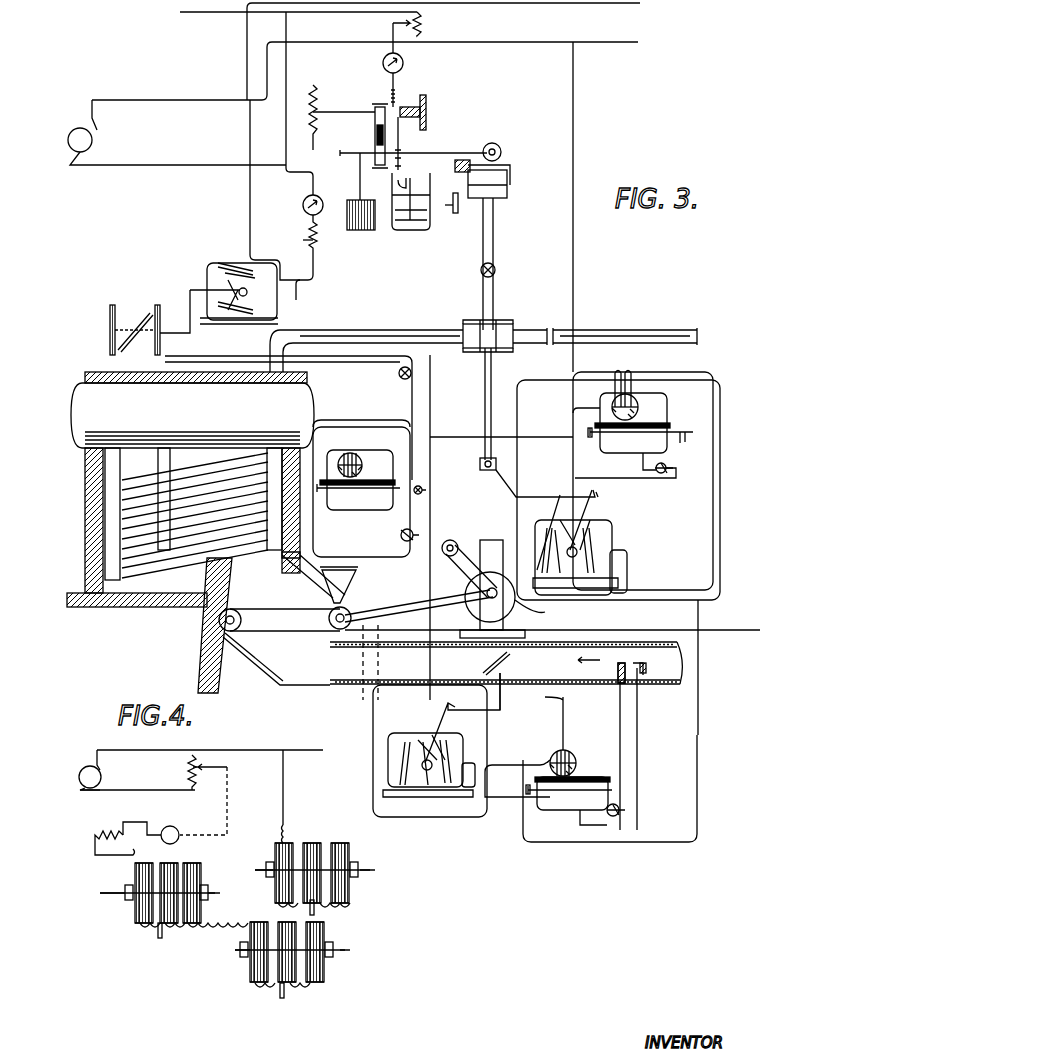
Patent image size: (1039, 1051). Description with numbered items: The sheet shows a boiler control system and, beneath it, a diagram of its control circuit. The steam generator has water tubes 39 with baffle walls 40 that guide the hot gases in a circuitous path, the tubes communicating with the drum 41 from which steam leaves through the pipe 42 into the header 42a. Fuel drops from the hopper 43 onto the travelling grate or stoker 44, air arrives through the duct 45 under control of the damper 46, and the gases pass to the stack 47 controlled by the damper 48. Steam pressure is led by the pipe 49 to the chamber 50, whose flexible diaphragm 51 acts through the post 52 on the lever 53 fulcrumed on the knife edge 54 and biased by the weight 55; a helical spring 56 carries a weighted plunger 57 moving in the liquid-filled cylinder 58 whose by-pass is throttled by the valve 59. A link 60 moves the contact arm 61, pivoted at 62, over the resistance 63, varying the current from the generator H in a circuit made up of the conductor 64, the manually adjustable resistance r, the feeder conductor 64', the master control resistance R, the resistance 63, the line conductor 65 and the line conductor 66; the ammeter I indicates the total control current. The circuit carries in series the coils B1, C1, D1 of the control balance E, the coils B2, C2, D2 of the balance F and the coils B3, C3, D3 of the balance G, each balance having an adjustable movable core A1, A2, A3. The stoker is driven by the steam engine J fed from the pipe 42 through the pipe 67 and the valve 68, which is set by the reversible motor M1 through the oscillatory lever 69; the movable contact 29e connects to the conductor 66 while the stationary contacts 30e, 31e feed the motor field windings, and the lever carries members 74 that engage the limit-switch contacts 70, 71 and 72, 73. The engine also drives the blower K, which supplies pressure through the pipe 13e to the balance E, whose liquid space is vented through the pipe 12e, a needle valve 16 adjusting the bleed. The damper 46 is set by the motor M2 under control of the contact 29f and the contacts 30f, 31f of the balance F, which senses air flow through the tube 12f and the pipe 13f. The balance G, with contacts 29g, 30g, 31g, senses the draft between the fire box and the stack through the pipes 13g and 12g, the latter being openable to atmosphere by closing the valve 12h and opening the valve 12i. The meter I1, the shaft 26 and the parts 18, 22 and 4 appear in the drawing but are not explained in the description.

In FIG. 3, the master control resistance R is at (428, 26).
In FIG. 3, the ammeter I1 is at (405, 66).
In FIG. 3, the contact arm 61 is at (325, 108).
In FIG. 4, the contact arm 61 is at (210, 766).
In FIG. 3, the pivot 62 is at (423, 105).
In FIG. 3, the resistance 63 is at (322, 118).
In FIG. 4, the resistance 63 is at (188, 780).
In FIG. 3, the link member 60 is at (386, 138).
In FIG. 3, the helical spring 56 is at (405, 160).
In FIG. 3, the lever 53 is at (450, 152).
In FIG. 3, the knife edge 54 is at (503, 150).
In FIG. 3, the post 52 is at (510, 163).
In FIG. 3, the flexible diaphragm 51 is at (510, 176).
In FIG. 3, the chamber 50 is at (508, 190).
In FIG. 3, the weighted plunger 57 is at (400, 183).
In FIG. 3, the biasing weight 55 is at (366, 232).
In FIG. 3, the cylinder 58 is at (405, 232).
In FIG. 3, the throttle valve 59 is at (456, 215).
In FIG. 3, the pipe 49 is at (495, 220).
In FIG. 3, the line conductor 66 is at (542, 40).
In FIG. 3, the feeder conductor 64' is at (443, 51).
In FIG. 3, the line conductor 65 is at (155, 165).
In FIG. 4, the line conductor 65 is at (97, 792).
In FIG. 3, the conductor 64 is at (516, 572).
In FIG. 4, the conductor 64 is at (274, 851).
In FIG. 3, the generator H is at (93, 140).
In FIG. 4, the generator H is at (80, 785).
In FIG. 3, the ammeter I is at (302, 205).
In FIG. 4, the ammeter I is at (180, 833).
In FIG. 3, the manually adjustable resistance r is at (308, 230).
In FIG. 4, the manually adjustable resistance r is at (100, 840).
In FIG. 3, the oscillatory lever 69 is at (190, 288).
In FIG. 3, the movable contact 70 is at (222, 262).
In FIG. 3, the fixed contact 71 is at (242, 270).
In FIG. 3, the limit switch contact 72 is at (240, 318).
In FIG. 3, the limit switch contact 73 is at (220, 324).
In FIG. 3, the members 74 is at (236, 285).
In FIG. 3, the breeching, stack or chimney 47 is at (122, 305).
In FIG. 3, the damper 48 is at (145, 310).
In FIG. 3, the pipe 12g is at (185, 355).
In FIG. 3, the valve 12h is at (399, 372).
In FIG. 3, the valve 12i is at (417, 496).
In FIG. 3, the pipe 12e is at (684, 445).
In FIG. 3, the tube 12f is at (639, 717).
In FIG. 3, the pipe 13g is at (290, 560).
In FIG. 3, the pipe 13e is at (665, 480).
In FIG. 3, the pipe 13f is at (580, 822).
In FIG. 3, the pipe 42 is at (440, 328).
In FIG. 3, the header 42a is at (500, 325).
In FIG. 3, the drum 41 is at (76, 390).
In FIG. 3, the baffle walls 40 is at (180, 500).
In FIG. 3, the water tubes 39 is at (140, 545).
In FIG. 3, the chute or hopper 43 is at (355, 572).
In FIG. 3, the travelling grate or stoker 44 is at (293, 630).
In FIG. 3, the duct 45 is at (310, 690).
In FIG. 3, the damper 46 is at (500, 660).
In FIG. 3, the air blower K is at (447, 560).
In FIG. 3, the steam engine J is at (560, 610).
In FIG. 3, the pipe 67 is at (495, 363).
In FIG. 3, the valve 68 is at (480, 462).
In FIG. 3, the needle valve 16 is at (410, 540).
In FIG. 3, the shaft 26 is at (588, 432).
In FIG. 3, the control coil C3 is at (345, 455).
In FIG. 4, the control coil C3 is at (135, 873).
In FIG. 3, the control coil B3 is at (355, 455).
In FIG. 4, the control coil B3 is at (170, 868).
In FIG. 3, the control coil D3 is at (358, 475).
In FIG. 4, the control coil D3 is at (190, 925).
In FIG. 3, the movable contact 29g is at (358, 455).
In FIG. 3, the stationary contact 30g is at (340, 475).
In FIG. 3, the stationary contact 31g is at (362, 464).
In FIG. 3, the control balance G is at (358, 474).
In FIG. 4, the control balance G is at (157, 879).
In FIG. 3, the control coil C1 is at (618, 395).
In FIG. 4, the control coil C1 is at (288, 845).
In FIG. 3, the control coil B1 is at (630, 395).
In FIG. 4, the control coil B1 is at (315, 845).
In FIG. 3, the control coil D1 is at (640, 410).
In FIG. 4, the control coil D1 is at (343, 845).
In FIG. 3, the movable contact 29e is at (640, 400).
In FIG. 3, the stationary contact 30e is at (615, 400).
In FIG. 3, the stationary contact 31e is at (642, 413).
In FIG. 3, the control balance E is at (668, 408).
In FIG. 4, the control balance E is at (317, 858).
In FIG. 3, the reversible electric motor M1 is at (608, 551).
In FIG. 3, the reversible motor M2 is at (431, 748).
In FIG. 3, the control coil C2 is at (552, 756).
In FIG. 4, the control coil C2 is at (250, 930).
In FIG. 3, the control coil B2 is at (570, 750).
In FIG. 4, the control coil B2 is at (285, 920).
In FIG. 3, the control coil D2 is at (580, 766).
In FIG. 4, the control coil D2 is at (325, 945).
In FIG. 3, the movable contact 29f is at (575, 756).
In FIG. 3, the stationary contact 30f is at (550, 772).
In FIG. 3, the stationary contact 31f is at (577, 769).
In FIG. 3, the control balance F is at (548, 768).
In FIG. 4, the control balance F is at (290, 966).
In FIG. 4, the shaft end 18 is at (212, 891).
In FIG. 4, the shaft end 22 is at (110, 893).
In FIG. 4, the brush 4 is at (158, 938).
In FIG. 4, the movable core A1 is at (355, 885).
In FIG. 4, the movable core A2 is at (250, 965).
In FIG. 4, the movable core A3 is at (130, 905).